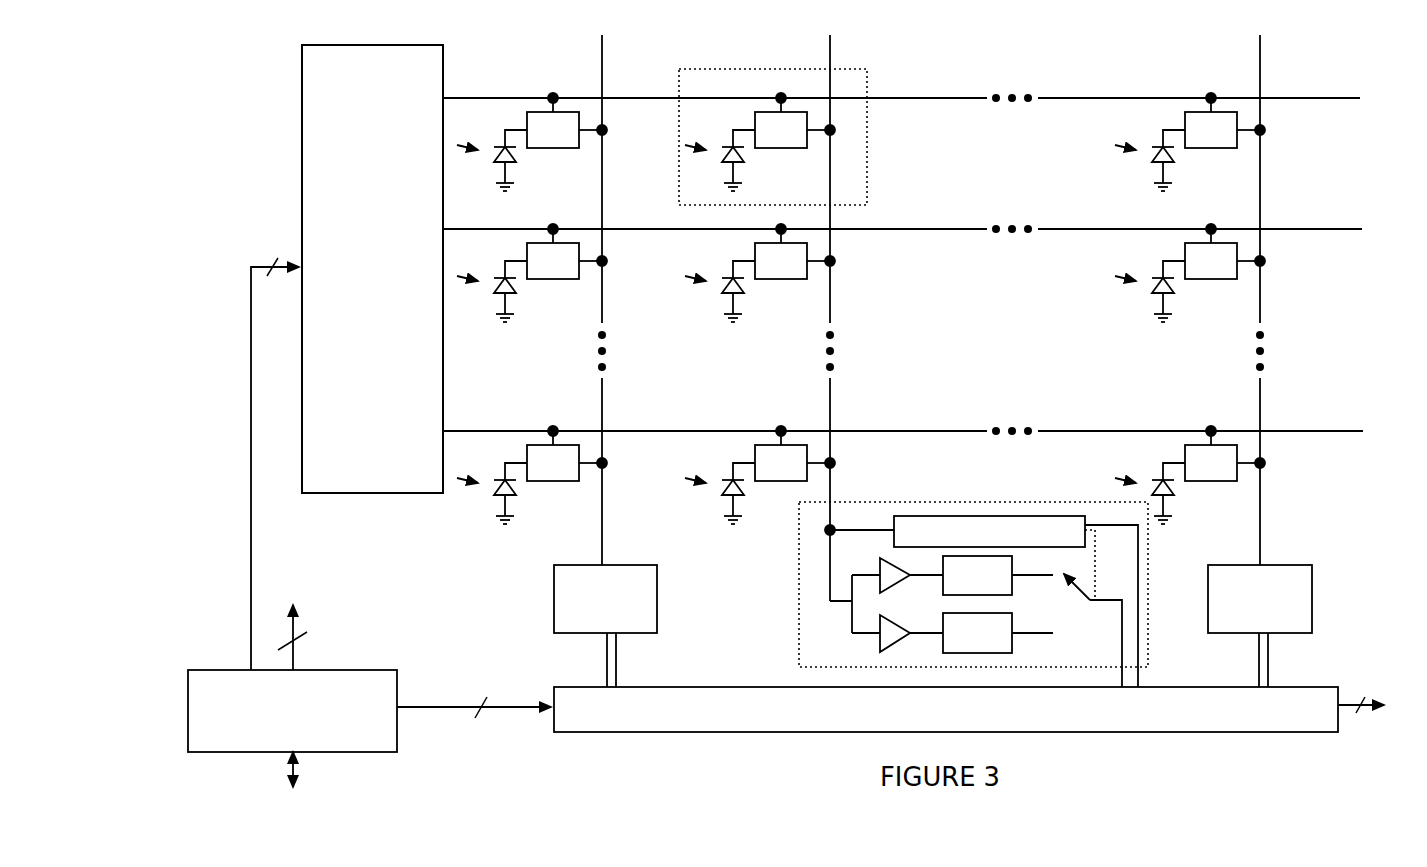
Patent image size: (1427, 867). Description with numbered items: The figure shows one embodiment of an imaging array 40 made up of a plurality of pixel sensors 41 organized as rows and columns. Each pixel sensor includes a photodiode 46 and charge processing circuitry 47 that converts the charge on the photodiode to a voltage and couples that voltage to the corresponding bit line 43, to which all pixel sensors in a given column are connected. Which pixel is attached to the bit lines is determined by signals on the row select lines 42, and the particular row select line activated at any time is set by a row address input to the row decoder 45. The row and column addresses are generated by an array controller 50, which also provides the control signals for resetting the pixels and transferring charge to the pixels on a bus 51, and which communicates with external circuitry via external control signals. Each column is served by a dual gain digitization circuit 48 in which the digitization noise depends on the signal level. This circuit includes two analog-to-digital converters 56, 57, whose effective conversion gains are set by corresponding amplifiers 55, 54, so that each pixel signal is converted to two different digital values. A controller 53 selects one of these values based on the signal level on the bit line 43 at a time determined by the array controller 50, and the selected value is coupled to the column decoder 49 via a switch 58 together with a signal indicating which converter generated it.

The imaging array 40 is at (211, 82).
The pixel sensor 41 is at (739, 69).
The row select line 42 is at (918, 96).
The bit line 43 is at (602, 407).
The row decoder 45 is at (302, 143).
The photodiode 46 is at (512, 154).
The charge processing circuitry 47 is at (540, 117).
The dual gain digitization circuit 48 is at (553, 578).
The column decoder 49 is at (667, 695).
The array controller 50 is at (362, 670).
The bus 51 is at (293, 628).
The controller 53 is at (937, 513).
The amplifier 54 is at (880, 650).
The amplifier 55 is at (882, 562).
The analog-to-digital converter 56 is at (1012, 588).
The analog-to-digital converter 57 is at (1012, 646).
The switch 58 is at (1102, 602).